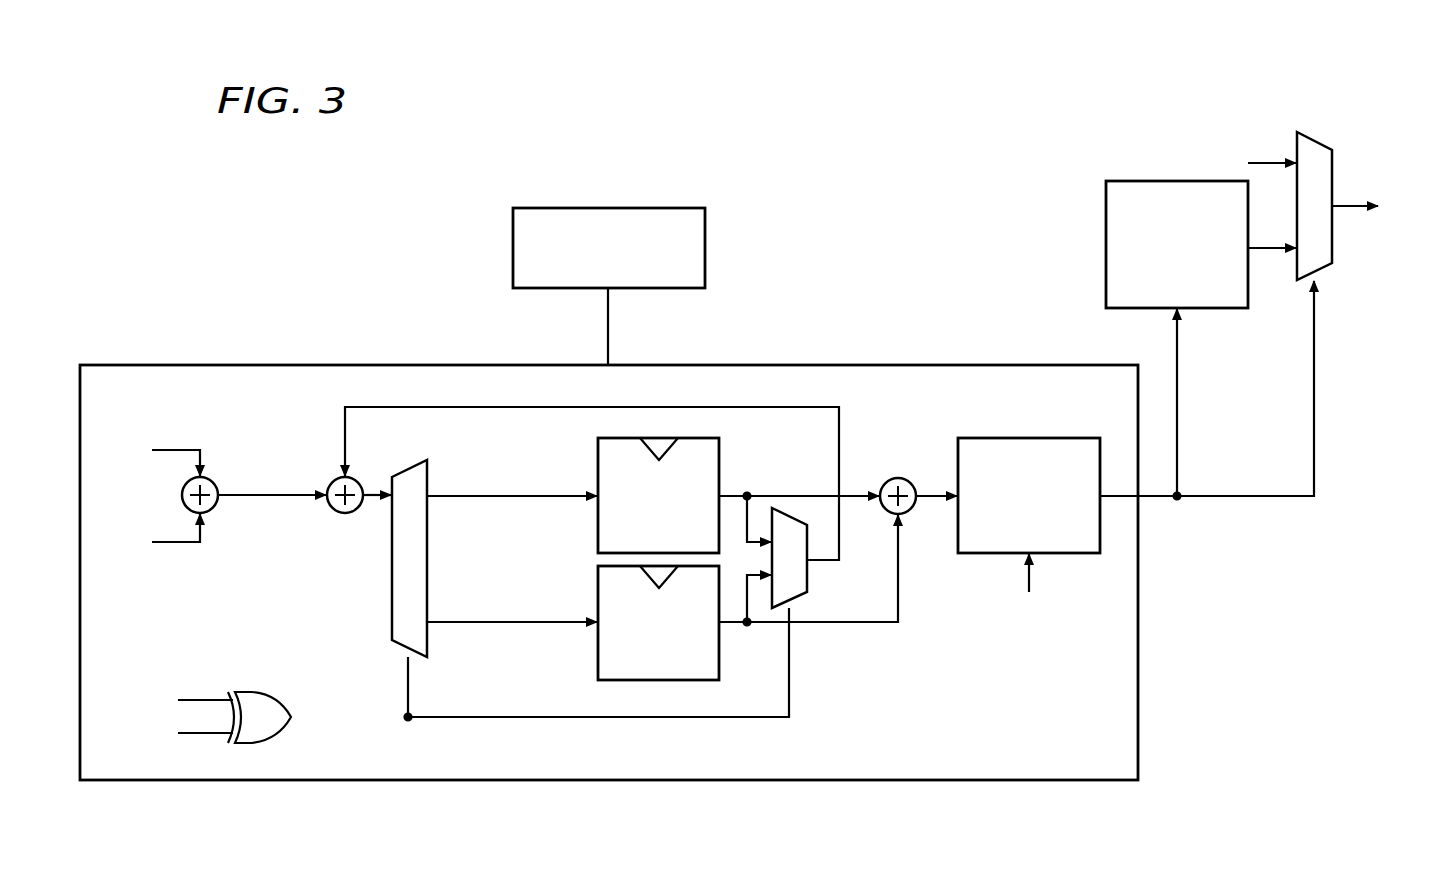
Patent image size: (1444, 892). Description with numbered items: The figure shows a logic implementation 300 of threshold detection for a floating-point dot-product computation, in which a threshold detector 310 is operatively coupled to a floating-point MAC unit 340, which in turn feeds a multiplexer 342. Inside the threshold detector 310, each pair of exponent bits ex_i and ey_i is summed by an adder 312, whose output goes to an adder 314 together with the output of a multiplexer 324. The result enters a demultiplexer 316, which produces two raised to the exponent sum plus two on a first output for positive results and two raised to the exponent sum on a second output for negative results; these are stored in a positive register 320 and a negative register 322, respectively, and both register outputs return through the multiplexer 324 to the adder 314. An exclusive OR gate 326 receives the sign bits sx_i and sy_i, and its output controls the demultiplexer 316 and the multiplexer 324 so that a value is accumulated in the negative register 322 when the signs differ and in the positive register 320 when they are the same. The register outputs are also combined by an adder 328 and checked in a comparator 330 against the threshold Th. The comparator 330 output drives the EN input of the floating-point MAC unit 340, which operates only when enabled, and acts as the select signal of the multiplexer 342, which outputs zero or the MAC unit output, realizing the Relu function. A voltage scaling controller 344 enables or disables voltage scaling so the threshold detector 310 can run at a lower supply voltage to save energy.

The logic implementation 300 is at (298, 156).
The threshold detector 310 is at (290, 365).
The adder 312 is at (181, 496).
The adder 314 is at (332, 508).
The demultiplexer 316 is at (392, 574).
The register 320 is at (719, 462).
The register 322 is at (598, 660).
The multiplexer 324 is at (808, 580).
The exclusive OR (XOR) gate 326 is at (254, 692).
The adder 328 is at (900, 478).
The comparator 330 is at (1040, 438).
The floating-point MAC unit 340 is at (1106, 244).
The multiplexer 342 is at (1334, 163).
The voltage scaling controller 344 is at (632, 208).